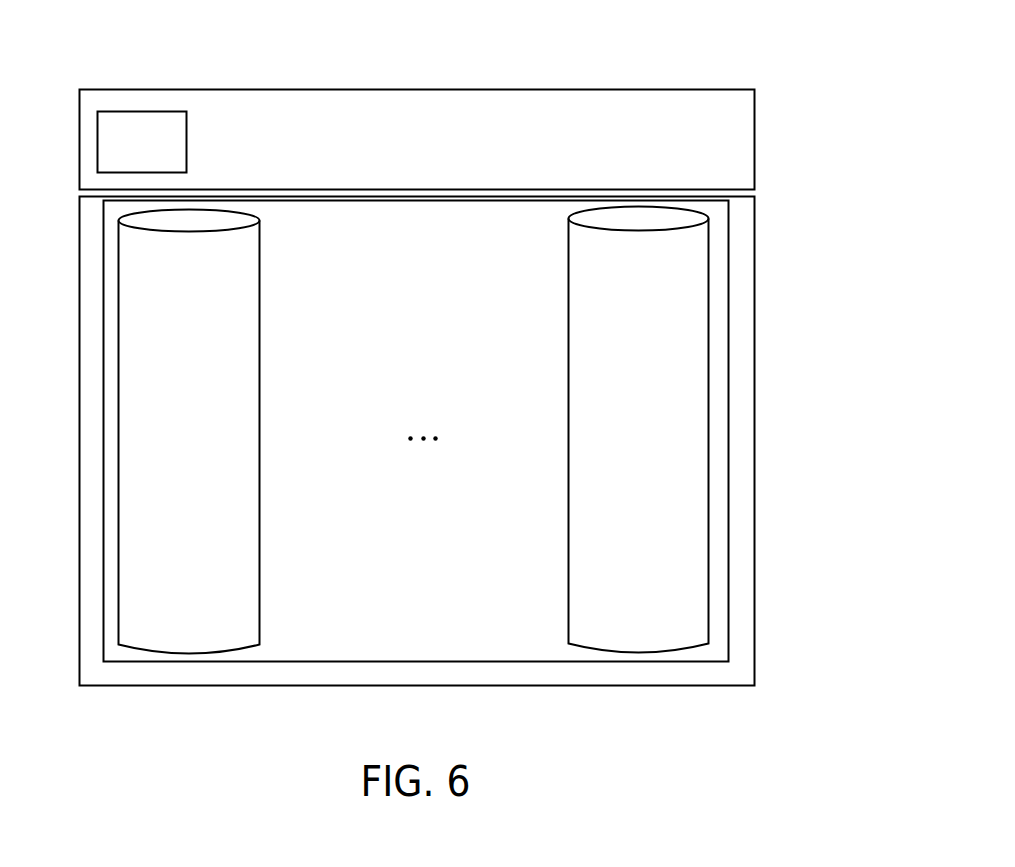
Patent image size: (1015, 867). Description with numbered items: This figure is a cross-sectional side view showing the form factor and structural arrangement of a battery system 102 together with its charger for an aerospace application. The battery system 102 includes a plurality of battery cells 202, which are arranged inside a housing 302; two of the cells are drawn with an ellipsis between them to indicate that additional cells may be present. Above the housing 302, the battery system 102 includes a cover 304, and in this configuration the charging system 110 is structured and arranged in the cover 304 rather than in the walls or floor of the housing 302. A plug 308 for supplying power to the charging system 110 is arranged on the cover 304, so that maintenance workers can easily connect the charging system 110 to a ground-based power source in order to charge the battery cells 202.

The battery system 102 is at (880, 195).
The cover 304 is at (582, 150).
The plug 308 is at (142, 142).
The charging system 110 is at (438, 165).
The housing 302 is at (743, 519).
The battery cells 202 is at (414, 430).